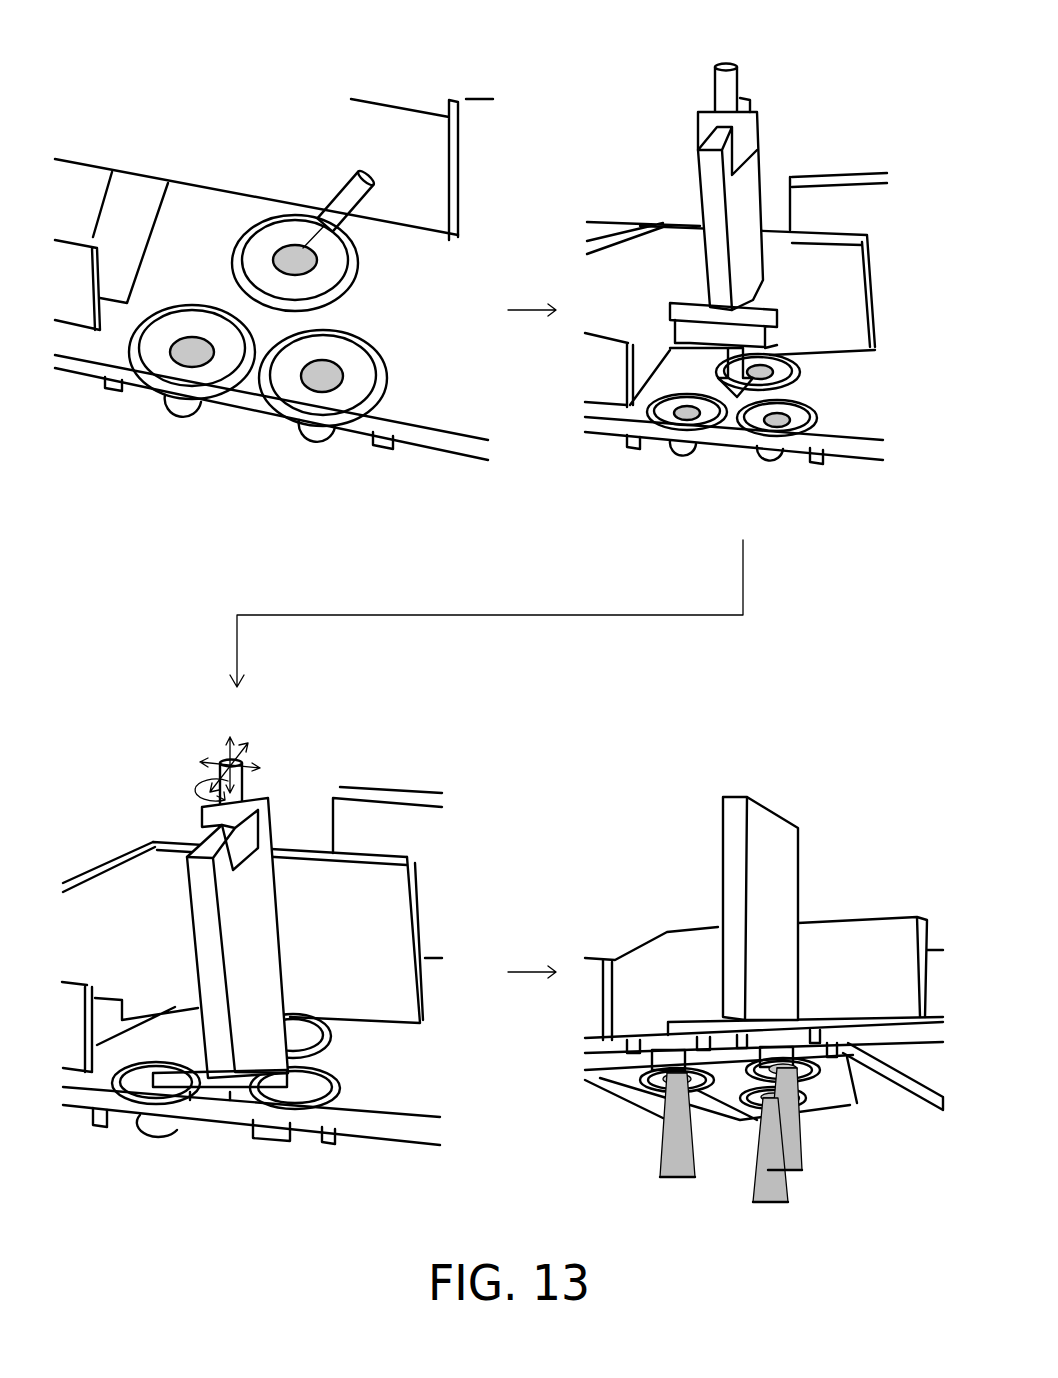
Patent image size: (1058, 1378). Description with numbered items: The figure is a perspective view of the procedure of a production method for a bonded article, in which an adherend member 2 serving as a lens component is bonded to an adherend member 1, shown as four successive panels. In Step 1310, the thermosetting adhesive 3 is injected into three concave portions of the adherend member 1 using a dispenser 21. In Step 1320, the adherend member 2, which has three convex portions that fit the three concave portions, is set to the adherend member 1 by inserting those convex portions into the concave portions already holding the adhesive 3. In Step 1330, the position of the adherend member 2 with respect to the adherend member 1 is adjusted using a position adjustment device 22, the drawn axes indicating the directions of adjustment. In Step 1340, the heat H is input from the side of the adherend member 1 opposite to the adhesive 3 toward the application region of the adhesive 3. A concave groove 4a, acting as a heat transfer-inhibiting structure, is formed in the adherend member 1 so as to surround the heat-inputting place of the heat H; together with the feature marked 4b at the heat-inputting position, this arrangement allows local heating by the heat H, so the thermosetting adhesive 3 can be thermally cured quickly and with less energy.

The adherend member 1 is at (458, 448).
The adherend member 2 is at (758, 165).
The thermosetting adhesive 3 is at (288, 253).
The dispenser 21 is at (345, 185).
The position adjustment device 22 is at (740, 82).
The concave groove 4a is at (663, 1078).
The nozzle 4b is at (787, 1069).
The heat H is at (663, 1170).
The step 1310 is at (436, 57).
The step 1320 is at (874, 58).
The step 1330 is at (433, 758).
The step 1340 is at (871, 758).